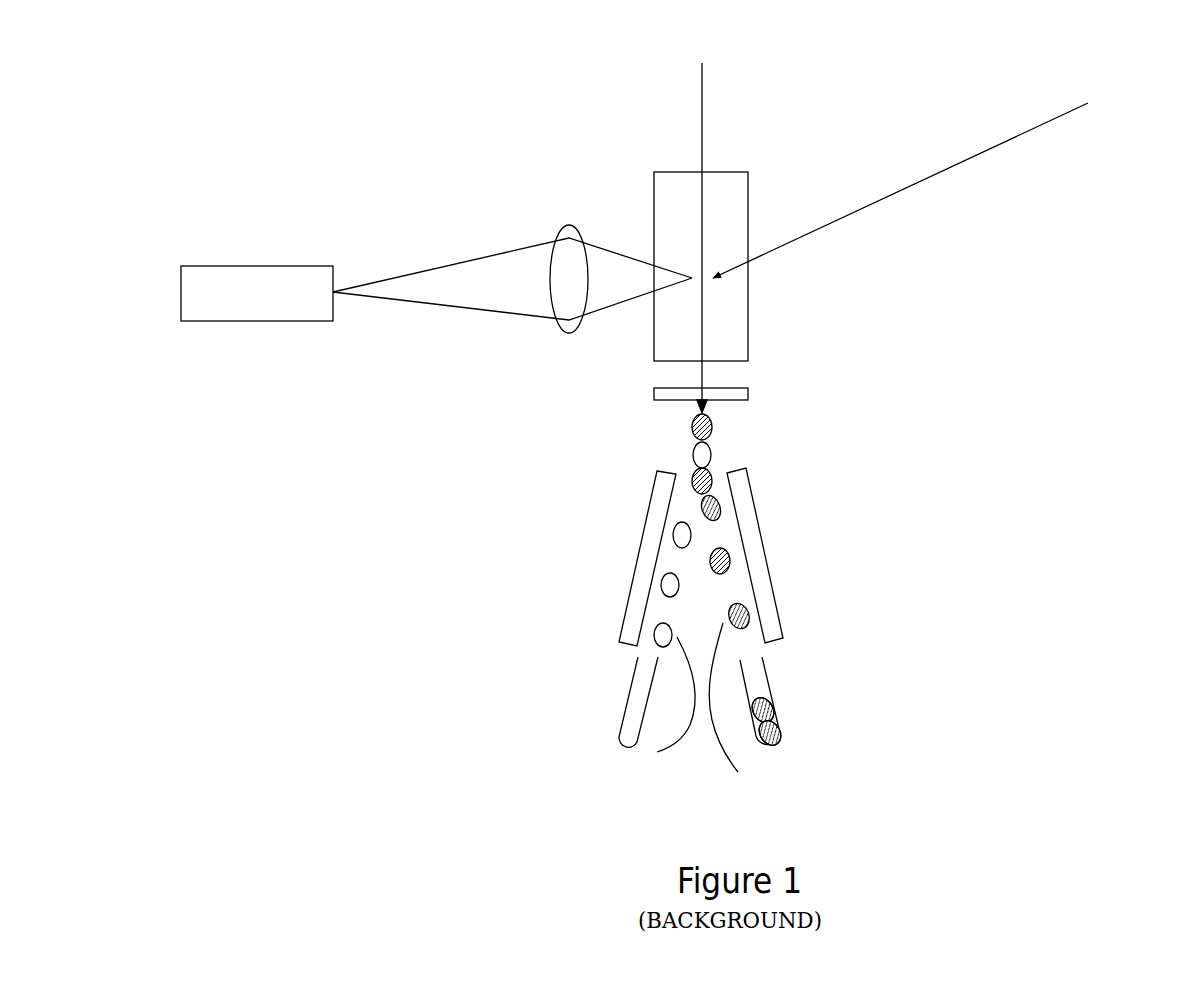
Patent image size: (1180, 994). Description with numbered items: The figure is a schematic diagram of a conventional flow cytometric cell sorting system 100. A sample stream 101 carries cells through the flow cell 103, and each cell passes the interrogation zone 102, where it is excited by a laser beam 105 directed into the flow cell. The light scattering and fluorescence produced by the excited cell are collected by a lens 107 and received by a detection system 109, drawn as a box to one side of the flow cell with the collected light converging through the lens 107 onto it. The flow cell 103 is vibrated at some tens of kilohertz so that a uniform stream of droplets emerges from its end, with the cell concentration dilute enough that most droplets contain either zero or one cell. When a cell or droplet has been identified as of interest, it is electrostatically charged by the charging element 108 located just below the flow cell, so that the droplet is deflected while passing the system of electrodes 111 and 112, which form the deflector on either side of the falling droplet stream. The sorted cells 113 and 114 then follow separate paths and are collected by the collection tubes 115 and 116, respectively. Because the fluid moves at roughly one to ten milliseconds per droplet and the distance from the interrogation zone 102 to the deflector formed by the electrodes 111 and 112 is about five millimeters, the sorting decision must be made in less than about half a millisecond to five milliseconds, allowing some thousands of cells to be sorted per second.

The flow cytometric cell sorting system 100 is at (347, 100).
The sample stream 101 is at (770, 122).
The interrogation zone 102 is at (725, 292).
The flow cell 103 is at (700, 258).
The laser beam 105 is at (858, 215).
The lens 107 is at (573, 330).
The electrostatic charging element 108 is at (732, 398).
The detection system 109 is at (242, 265).
The electrode 111 is at (778, 598).
The electrode 112 is at (623, 582).
The sorted cells 113 is at (757, 712).
The sorted cells 114 is at (647, 719).
The collection tube 115 is at (840, 740).
The collection tube 116 is at (623, 674).